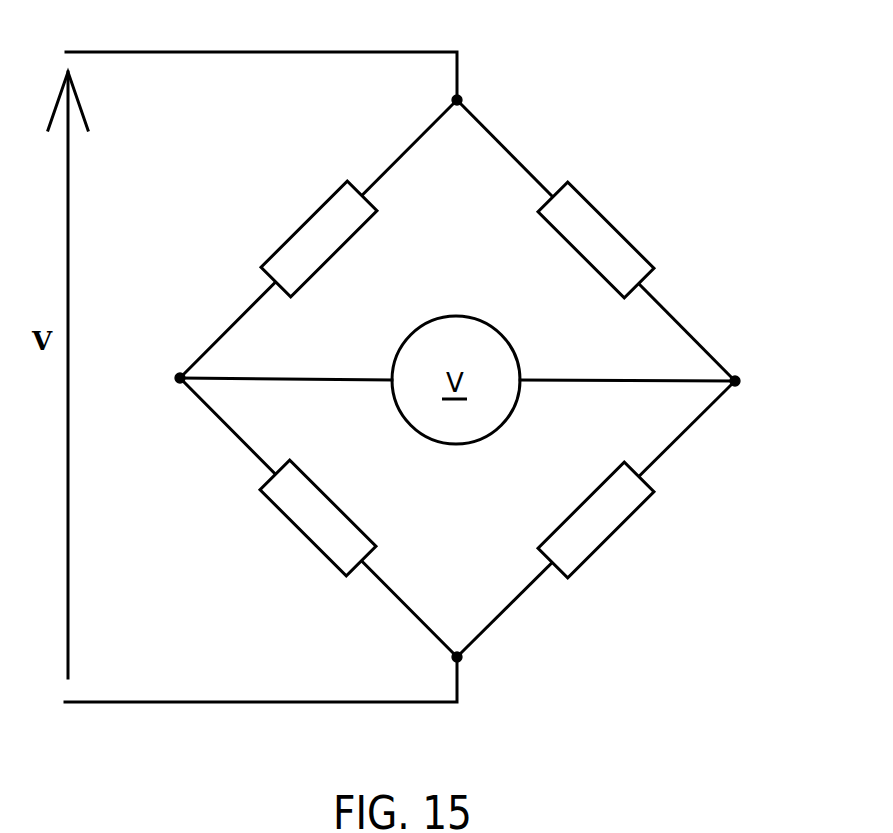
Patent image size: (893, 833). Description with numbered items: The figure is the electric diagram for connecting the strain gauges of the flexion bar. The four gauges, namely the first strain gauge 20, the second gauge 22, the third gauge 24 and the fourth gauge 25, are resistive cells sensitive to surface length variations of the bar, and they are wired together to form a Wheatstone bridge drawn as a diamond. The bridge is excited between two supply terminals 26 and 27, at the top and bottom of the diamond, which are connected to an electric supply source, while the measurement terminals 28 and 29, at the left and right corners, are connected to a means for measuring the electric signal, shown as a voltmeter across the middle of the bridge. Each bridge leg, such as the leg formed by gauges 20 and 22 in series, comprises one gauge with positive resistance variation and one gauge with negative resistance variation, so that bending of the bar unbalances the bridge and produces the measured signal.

The first strain gauge 20 is at (330, 222).
The second strain gauge 22 is at (326, 543).
The third strain gauge 24 is at (612, 248).
The fourth strain gauge 25 is at (604, 527).
The supply terminal 26 is at (462, 98).
The supply terminal 27 is at (462, 660).
The measurement terminal 28 is at (180, 382).
The measurement terminal 29 is at (737, 378).